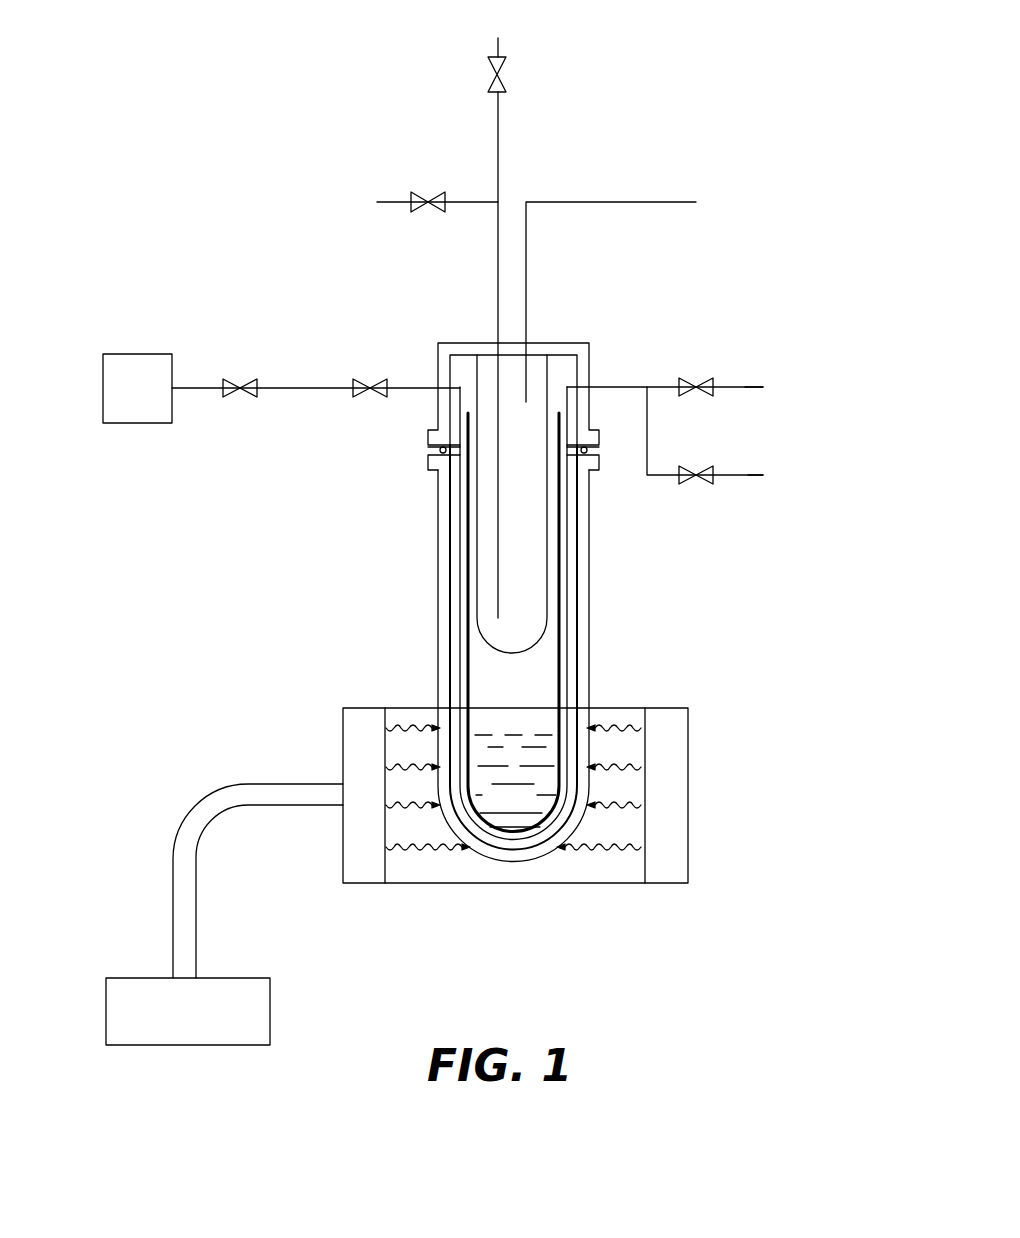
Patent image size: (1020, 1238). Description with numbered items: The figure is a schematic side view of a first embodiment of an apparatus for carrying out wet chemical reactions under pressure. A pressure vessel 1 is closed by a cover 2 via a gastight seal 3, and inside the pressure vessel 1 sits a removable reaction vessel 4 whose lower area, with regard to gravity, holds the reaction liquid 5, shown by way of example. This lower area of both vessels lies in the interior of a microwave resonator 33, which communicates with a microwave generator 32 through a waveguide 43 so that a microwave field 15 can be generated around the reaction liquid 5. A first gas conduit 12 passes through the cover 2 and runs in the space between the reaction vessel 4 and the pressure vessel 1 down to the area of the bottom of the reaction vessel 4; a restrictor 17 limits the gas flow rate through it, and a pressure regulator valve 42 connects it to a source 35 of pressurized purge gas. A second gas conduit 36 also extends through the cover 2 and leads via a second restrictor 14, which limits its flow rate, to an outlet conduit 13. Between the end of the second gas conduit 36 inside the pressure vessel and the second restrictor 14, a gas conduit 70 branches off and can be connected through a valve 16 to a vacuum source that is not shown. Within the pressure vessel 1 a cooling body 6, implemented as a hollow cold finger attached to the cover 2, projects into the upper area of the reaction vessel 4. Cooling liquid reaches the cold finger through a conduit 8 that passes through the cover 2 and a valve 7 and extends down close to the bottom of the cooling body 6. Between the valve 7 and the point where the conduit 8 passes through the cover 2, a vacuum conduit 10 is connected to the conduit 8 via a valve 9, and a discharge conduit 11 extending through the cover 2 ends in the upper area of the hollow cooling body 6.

The pressure vessel 1 is at (589, 662).
The cover 2 is at (437, 407).
The gastight seal 3 is at (438, 451).
The reaction vessel 4 is at (560, 610).
The reaction liquid 5 is at (518, 813).
The cooling body 6 is at (547, 535).
The valve 7 is at (430, 199).
The conduit 8 is at (377, 202).
The valve 9 is at (488, 82).
The vacuum conduit 10 is at (498, 38).
The discharge conduit 11 is at (684, 202).
The first gas conduit 12 is at (315, 388).
The outlet conduit 13 is at (747, 387).
The second restrictor 14 is at (697, 380).
The microwave field 15 is at (560, 863).
The valve 16 is at (697, 485).
The restrictor 17 is at (380, 385).
The microwave generator 32 is at (112, 988).
The microwave resonator 33 is at (357, 750).
The source of pressurized purge gas 35 is at (126, 362).
The second gas conduit 36 is at (605, 387).
The pressure regulator valve 42 is at (240, 385).
The waveguide 43 is at (190, 824).
The gas conduit 70 is at (750, 476).